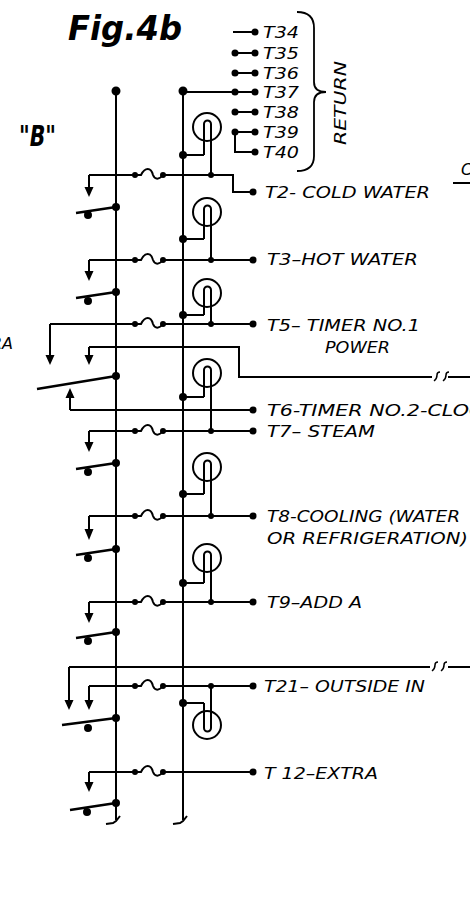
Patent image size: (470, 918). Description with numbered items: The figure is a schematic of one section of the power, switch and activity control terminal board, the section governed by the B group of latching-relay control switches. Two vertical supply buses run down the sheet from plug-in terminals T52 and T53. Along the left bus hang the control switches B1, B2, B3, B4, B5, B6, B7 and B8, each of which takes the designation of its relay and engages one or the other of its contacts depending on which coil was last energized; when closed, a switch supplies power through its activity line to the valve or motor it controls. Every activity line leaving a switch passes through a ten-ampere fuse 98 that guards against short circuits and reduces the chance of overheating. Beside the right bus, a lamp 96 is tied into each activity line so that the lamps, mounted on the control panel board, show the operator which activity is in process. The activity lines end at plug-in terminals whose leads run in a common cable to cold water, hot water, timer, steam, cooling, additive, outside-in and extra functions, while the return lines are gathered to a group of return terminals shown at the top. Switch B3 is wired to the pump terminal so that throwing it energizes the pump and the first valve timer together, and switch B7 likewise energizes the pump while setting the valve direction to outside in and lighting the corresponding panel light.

The lamp 96 is at (221, 214).
The fuse 98 is at (151, 170).
The terminal T52 is at (117, 445).
The terminal T53 is at (184, 445).
The control switch B1 is at (100, 166).
The control switch B2 is at (75, 273).
The control switch B3 is at (30, 389).
The control switch B4 is at (60, 466).
The control switch B5 is at (58, 558).
The control switch B6 is at (58, 632).
The control switch B7 is at (28, 726).
The control switch B8 is at (58, 804).